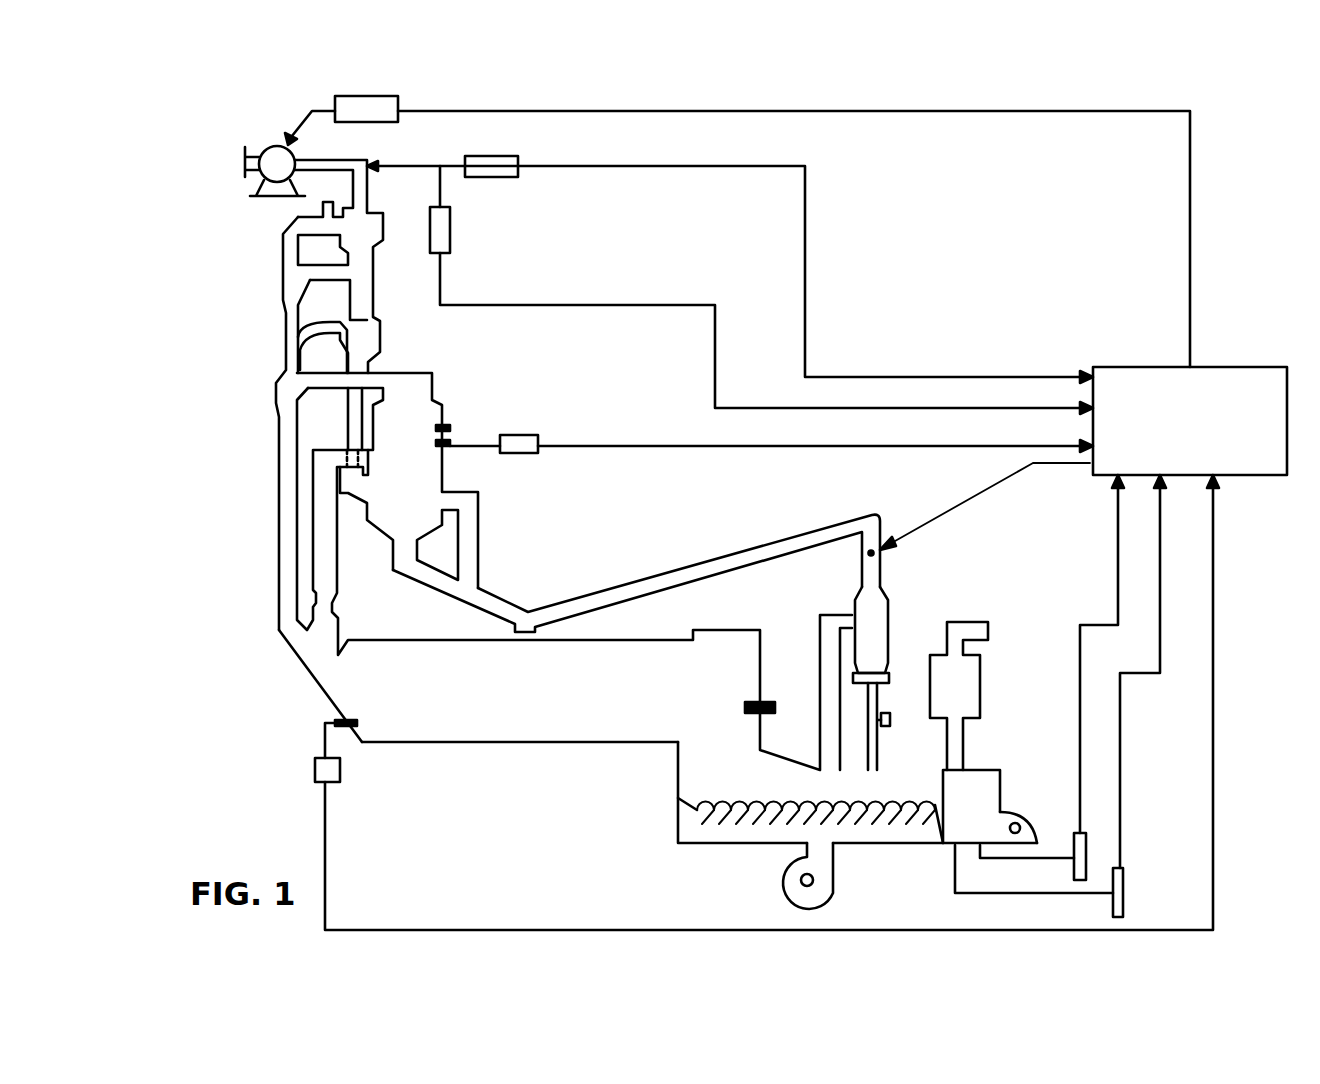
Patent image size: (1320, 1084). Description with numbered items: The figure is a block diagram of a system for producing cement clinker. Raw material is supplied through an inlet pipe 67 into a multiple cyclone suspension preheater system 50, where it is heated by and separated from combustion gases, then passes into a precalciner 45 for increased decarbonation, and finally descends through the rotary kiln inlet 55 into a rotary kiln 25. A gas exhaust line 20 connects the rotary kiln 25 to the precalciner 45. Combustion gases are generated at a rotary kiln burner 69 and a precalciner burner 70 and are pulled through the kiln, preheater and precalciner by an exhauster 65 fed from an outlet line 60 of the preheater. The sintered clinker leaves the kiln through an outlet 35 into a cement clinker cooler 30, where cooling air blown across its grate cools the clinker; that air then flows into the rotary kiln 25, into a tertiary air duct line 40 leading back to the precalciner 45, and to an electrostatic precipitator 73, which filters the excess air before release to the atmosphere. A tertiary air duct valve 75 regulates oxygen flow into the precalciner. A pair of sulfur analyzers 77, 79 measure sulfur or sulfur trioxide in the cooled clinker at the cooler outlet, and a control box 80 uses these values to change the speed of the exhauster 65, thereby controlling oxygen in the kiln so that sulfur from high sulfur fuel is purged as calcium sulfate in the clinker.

The gas exhaust line 20 is at (338, 567).
The rotary kiln 25 is at (467, 747).
The cement clinker cooler 30 is at (868, 845).
The outlet 35 is at (678, 790).
The tertiary air duct line 40 is at (680, 566).
The precalciner 45 is at (447, 418).
The multiple cyclone suspension preheater system 50 is at (240, 210).
The rotary kiln inlet 55 is at (297, 670).
The outlet line 60 is at (338, 158).
The exhauster 65 is at (262, 146).
The inlet pipe 67 is at (319, 193).
The rotary kiln burner 69 is at (770, 700).
The precalciner burner 70 is at (450, 424).
The electrostatic precipitator 73 is at (983, 680).
The tertiary air duct valve 75 is at (884, 550).
The sulfur analyzer 77 is at (1087, 843).
The sulfur analyzer 79 is at (1124, 888).
The control box 80 is at (1215, 367).